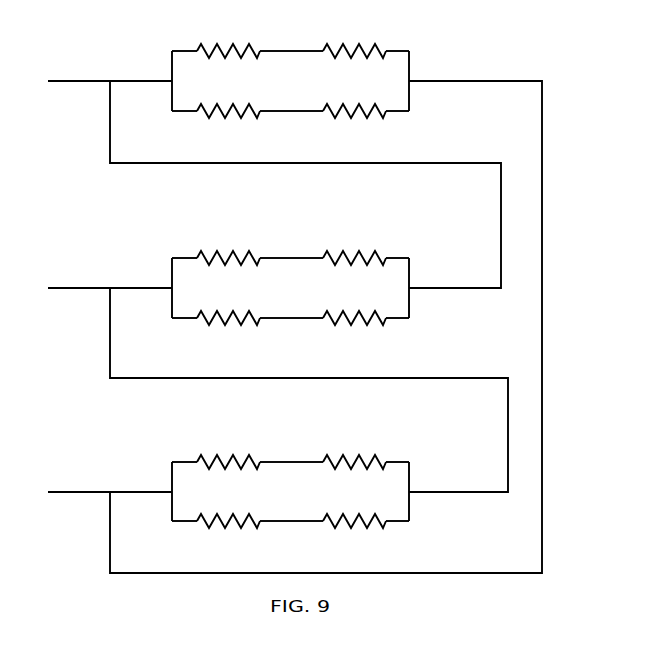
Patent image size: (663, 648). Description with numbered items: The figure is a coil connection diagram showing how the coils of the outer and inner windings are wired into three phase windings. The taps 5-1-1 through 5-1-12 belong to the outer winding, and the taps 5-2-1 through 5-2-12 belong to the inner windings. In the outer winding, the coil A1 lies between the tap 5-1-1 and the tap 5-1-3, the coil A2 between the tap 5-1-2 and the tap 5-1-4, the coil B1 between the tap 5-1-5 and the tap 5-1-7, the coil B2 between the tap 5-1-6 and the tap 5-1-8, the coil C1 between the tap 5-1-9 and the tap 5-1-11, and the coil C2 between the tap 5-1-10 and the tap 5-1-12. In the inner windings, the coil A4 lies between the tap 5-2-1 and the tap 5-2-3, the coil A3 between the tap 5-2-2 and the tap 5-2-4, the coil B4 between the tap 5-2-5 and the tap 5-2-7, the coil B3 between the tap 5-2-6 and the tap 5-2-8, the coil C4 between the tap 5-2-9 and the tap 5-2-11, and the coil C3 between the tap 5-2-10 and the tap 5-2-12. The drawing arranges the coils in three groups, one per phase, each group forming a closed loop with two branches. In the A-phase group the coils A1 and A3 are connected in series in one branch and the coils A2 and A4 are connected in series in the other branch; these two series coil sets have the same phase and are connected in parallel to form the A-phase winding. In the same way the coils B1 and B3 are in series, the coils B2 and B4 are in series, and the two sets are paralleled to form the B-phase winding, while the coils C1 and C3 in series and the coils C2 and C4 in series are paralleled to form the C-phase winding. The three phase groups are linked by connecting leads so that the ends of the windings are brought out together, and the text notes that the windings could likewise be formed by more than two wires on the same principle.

The tap of the outer winding 5-1-1 is at (169, 243).
The tap of the outer winding 5-1-2 is at (169, 331).
The tap of the outer winding 5-1-3 is at (271, 242).
The tap of the outer winding 5-1-4 is at (267, 331).
The tap of the outer winding 5-1-5 is at (169, 35).
The tap of the outer winding 5-1-6 is at (169, 124).
The tap of the outer winding 5-1-7 is at (268, 35).
The tap of the outer winding 5-1-8 is at (268, 124).
The tap of the outer winding 5-1-9 is at (169, 445).
The tap of the outer winding 5-1-10 is at (169, 534).
The tap of the outer winding 5-1-11 is at (273, 445).
The tap of the outer winding 5-1-12 is at (267, 534).
The tap of the inner winding 5-2-1 is at (313, 332).
The tap of the inner winding 5-2-2 is at (317, 242).
The tap of the inner winding 5-2-3 is at (409, 332).
The tap of the inner winding 5-2-4 is at (407, 242).
The tap of the inner winding 5-2-5 is at (314, 124).
The tap of the inner winding 5-2-6 is at (316, 35).
The tap of the inner winding 5-2-7 is at (409, 124).
The tap of the inner winding 5-2-8 is at (399, 35).
The tap of the inner winding 5-2-9 is at (313, 534).
The tap of the inner winding 5-2-10 is at (322, 445).
The tap of the inner winding 5-2-11 is at (413, 534).
The tap of the inner winding 5-2-12 is at (411, 445).
The coil A1 is at (228, 271).
The coil A2 is at (228, 333).
The coil A3 is at (354, 267).
The coil A4 is at (354, 333).
The coil B1 is at (228, 64).
The coil B2 is at (228, 125).
The coil B3 is at (354, 60).
The coil B4 is at (354, 125).
The coil C1 is at (228, 475).
The coil C2 is at (228, 535).
The coil C3 is at (354, 471).
The coil C4 is at (354, 535).